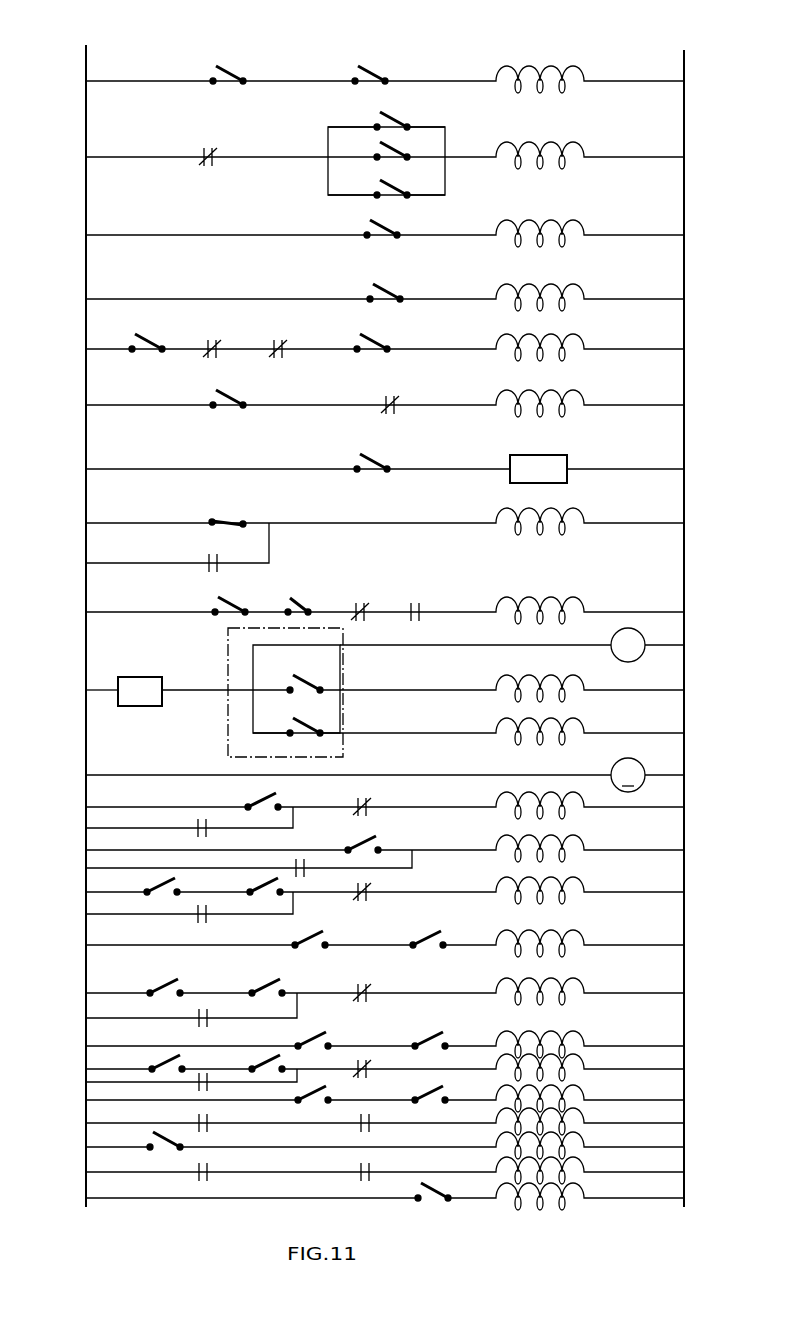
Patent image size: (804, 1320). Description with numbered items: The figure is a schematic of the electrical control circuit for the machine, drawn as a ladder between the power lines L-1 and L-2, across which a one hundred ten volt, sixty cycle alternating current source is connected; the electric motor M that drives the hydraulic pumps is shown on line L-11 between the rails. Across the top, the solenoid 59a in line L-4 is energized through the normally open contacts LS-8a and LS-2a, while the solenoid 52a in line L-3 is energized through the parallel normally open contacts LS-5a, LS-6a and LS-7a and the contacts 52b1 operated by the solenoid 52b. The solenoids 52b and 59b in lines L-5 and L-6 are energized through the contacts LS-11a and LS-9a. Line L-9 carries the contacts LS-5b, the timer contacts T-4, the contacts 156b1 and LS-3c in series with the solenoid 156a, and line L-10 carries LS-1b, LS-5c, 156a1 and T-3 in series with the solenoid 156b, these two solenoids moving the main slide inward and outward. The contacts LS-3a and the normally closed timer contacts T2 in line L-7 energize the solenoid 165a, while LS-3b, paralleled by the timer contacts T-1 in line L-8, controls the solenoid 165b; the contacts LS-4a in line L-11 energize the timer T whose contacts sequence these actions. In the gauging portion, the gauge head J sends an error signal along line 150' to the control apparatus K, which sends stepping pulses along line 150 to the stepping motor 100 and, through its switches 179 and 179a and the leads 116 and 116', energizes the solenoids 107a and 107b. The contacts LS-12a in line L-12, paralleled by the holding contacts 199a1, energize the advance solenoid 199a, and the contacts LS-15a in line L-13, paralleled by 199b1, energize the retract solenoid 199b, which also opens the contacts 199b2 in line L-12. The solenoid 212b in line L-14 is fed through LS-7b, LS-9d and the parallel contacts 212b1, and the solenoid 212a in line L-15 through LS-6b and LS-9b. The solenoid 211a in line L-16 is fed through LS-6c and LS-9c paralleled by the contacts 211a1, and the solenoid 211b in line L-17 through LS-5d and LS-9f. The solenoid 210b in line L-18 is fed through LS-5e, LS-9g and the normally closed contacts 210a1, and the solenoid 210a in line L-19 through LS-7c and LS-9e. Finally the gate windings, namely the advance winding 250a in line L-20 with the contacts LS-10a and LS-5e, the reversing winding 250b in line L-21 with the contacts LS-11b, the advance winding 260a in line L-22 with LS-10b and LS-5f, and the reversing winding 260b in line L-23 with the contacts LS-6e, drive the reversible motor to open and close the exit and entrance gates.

The power supply line L-1 is at (84, 55).
The power supply line L-2 is at (684, 72).
The circuit line L-3 is at (684, 157).
The circuit line L-4 is at (684, 85).
The circuit line L-5 is at (684, 299).
The circuit line L-6 is at (684, 235).
The circuit line L-7 is at (684, 405).
The circuit line L-8 is at (684, 523).
The circuit line L-9 is at (684, 349).
The circuit line L-10 is at (684, 612).
The circuit line L-11 is at (684, 469).
The circuit line L-12 is at (684, 807).
The line L-13 is at (684, 850).
The circuit line L-14 is at (684, 892).
The circuit line L-15 is at (684, 945).
The circuit line L-16 is at (684, 993).
The circuit line L-17 is at (684, 1046).
The circuit line L-18 is at (684, 1069).
The circuit line L-19 is at (684, 1100).
The circuit line L-20 is at (684, 1123).
The circuit line L-21 is at (684, 1147).
The circuit line L-22 is at (684, 1172).
The circuit line L-23 is at (684, 1198).
The normally open contacts LS-8a is at (225, 68).
The normally open contacts LS-2a is at (368, 68).
The solenoid 59a is at (561, 72).
The normally closed contacts 52b1 is at (210, 149).
The normally open contacts LS-5a is at (395, 109).
The normally open contacts LS-6a is at (398, 148).
The normally open contacts LS-7a is at (385, 189).
The solenoid 52a is at (561, 148).
The normally open contacts LS-9a is at (378, 224).
The solenoid 59b is at (561, 226).
The normally open contacts LS-11a is at (380, 287).
The solenoid 52b is at (561, 290).
The normally open contacts LS-5b is at (142, 328).
The normally closed timer contacts T-4 is at (212, 338).
The normally closed contacts 156b1 is at (278, 338).
The limit switch contact LS-3c is at (378, 333).
The solenoid 156a is at (561, 340).
The normally open contacts LS-3a is at (228, 392).
The normally closed timer contacts T2 is at (392, 393).
The solenoid 165a is at (561, 396).
The normally open contacts LS-4a is at (380, 453).
The timer T is at (555, 457).
The normally closed contacts LS-3b is at (234, 519).
The solenoid 165b is at (561, 514).
The normally open timer contacts T-1 is at (218, 558).
The normally open contacts LS-1b is at (212, 596).
The normally open contacts LS-5c is at (296, 598).
The normally closed contacts 156a1 is at (360, 600).
The normally open timer contacts T-3 is at (417, 600).
The solenoid 156b is at (561, 603).
The control apparatus K is at (226, 742).
The line 150 is at (512, 660).
The stepping motor 100 is at (638, 641).
The gauge head J is at (162, 692).
The line 150' is at (207, 672).
The switch 179 is at (305, 683).
The line 116 is at (405, 704).
The solenoid 107a is at (565, 686).
The switch 179a is at (303, 712).
The line 116' is at (405, 747).
The return solenoid 107b is at (565, 729).
The electric motor M is at (684, 775).
The normally open contacts LS-12a is at (247, 801).
The relay contact 199b2 is at (364, 808).
The advance solenoid 199a is at (558, 796).
The normally open holding contacts 199a1 is at (205, 835).
The normally open contacts LS-15a is at (378, 843).
The retract solenoid 199b is at (565, 844).
The normally open holding contacts 199b1 is at (298, 872).
The normally open contacts LS-7b is at (162, 882).
The normally open contacts LS-9d is at (264, 882).
The solenoid 212a is at (370, 890).
The solenoid 212b is at (565, 886).
The normally open contacts 212b1 is at (187, 924).
The normally open contacts LS-6b is at (301, 936).
The normally open contacts LS-9b is at (414, 936).
The normally open contacts LS-6c is at (166, 980).
The normally open contacts LS-9c is at (262, 980).
The solenoid 211b is at (360, 986).
The solenoid 211a is at (565, 986).
The normally open contacts 211a1 is at (183, 1025).
The normally open contacts LS-5d is at (301, 1036).
The normally open contacts LS-9f is at (418, 1036).
The normally open contacts LS-5e is at (162, 1063).
The normally open contacts LS-9g is at (264, 1063).
The normally closed contacts 210a1 is at (365, 1066).
The solenoid 210b is at (584, 1061).
The normally open contacts LS-7c is at (291, 1094).
The normally open contacts LS-9e is at (414, 1094).
The solenoid 210a is at (584, 1089).
The normally open contacts LS-10a is at (208, 1120).
The advance winding 250a is at (584, 1113).
The limit switch contact LS-11b is at (166, 1144).
The reversing winding 250b is at (584, 1138).
The normally open contacts LS-10b is at (189, 1181).
The normally open contacts LS-5f is at (357, 1181).
The advance winding 260a is at (584, 1163).
The limit switch contact LS-6e is at (436, 1200).
The reversing winding 260b is at (584, 1189).